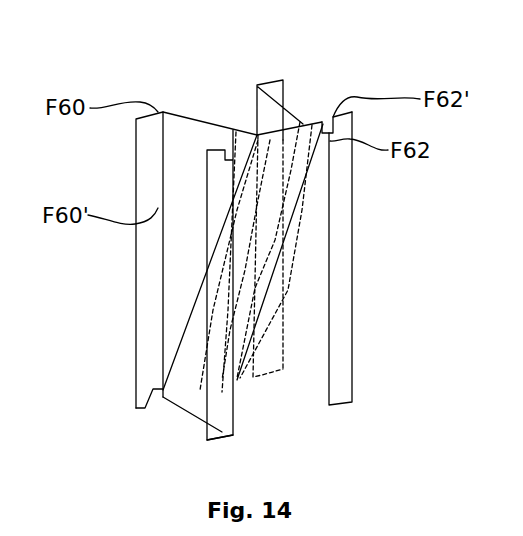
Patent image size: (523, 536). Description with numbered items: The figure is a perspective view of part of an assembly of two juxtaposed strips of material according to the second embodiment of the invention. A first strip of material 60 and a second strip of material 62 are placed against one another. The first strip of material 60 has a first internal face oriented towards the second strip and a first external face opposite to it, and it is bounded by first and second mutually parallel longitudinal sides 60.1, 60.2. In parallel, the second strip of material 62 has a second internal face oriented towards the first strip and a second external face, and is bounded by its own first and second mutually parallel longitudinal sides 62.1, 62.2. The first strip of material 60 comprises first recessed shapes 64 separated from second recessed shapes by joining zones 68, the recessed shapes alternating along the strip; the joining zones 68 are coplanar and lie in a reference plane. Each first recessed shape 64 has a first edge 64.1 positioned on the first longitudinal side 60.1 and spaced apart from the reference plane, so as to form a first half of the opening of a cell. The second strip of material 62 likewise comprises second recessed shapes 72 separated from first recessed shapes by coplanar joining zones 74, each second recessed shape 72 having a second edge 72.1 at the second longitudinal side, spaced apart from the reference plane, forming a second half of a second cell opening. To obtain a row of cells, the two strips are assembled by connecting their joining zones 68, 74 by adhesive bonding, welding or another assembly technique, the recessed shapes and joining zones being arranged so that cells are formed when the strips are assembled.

The first strip of material 60 is at (153, 160).
The first longitudinal side 60.1 is at (260, 84).
The second longitudinal side 60.2 is at (147, 409).
The second strip of material 62 is at (216, 407).
The first longitudinal side 62.1 is at (352, 112).
The second longitudinal side 62.2 is at (208, 440).
The first recessed shape 64 is at (244, 128).
The first edge 64.1 is at (199, 121).
The joining zones 68 is at (284, 90).
The second recessed shape 72 is at (263, 406).
The second edge 72.1 is at (233, 384).
The joining zones 74 is at (346, 266).